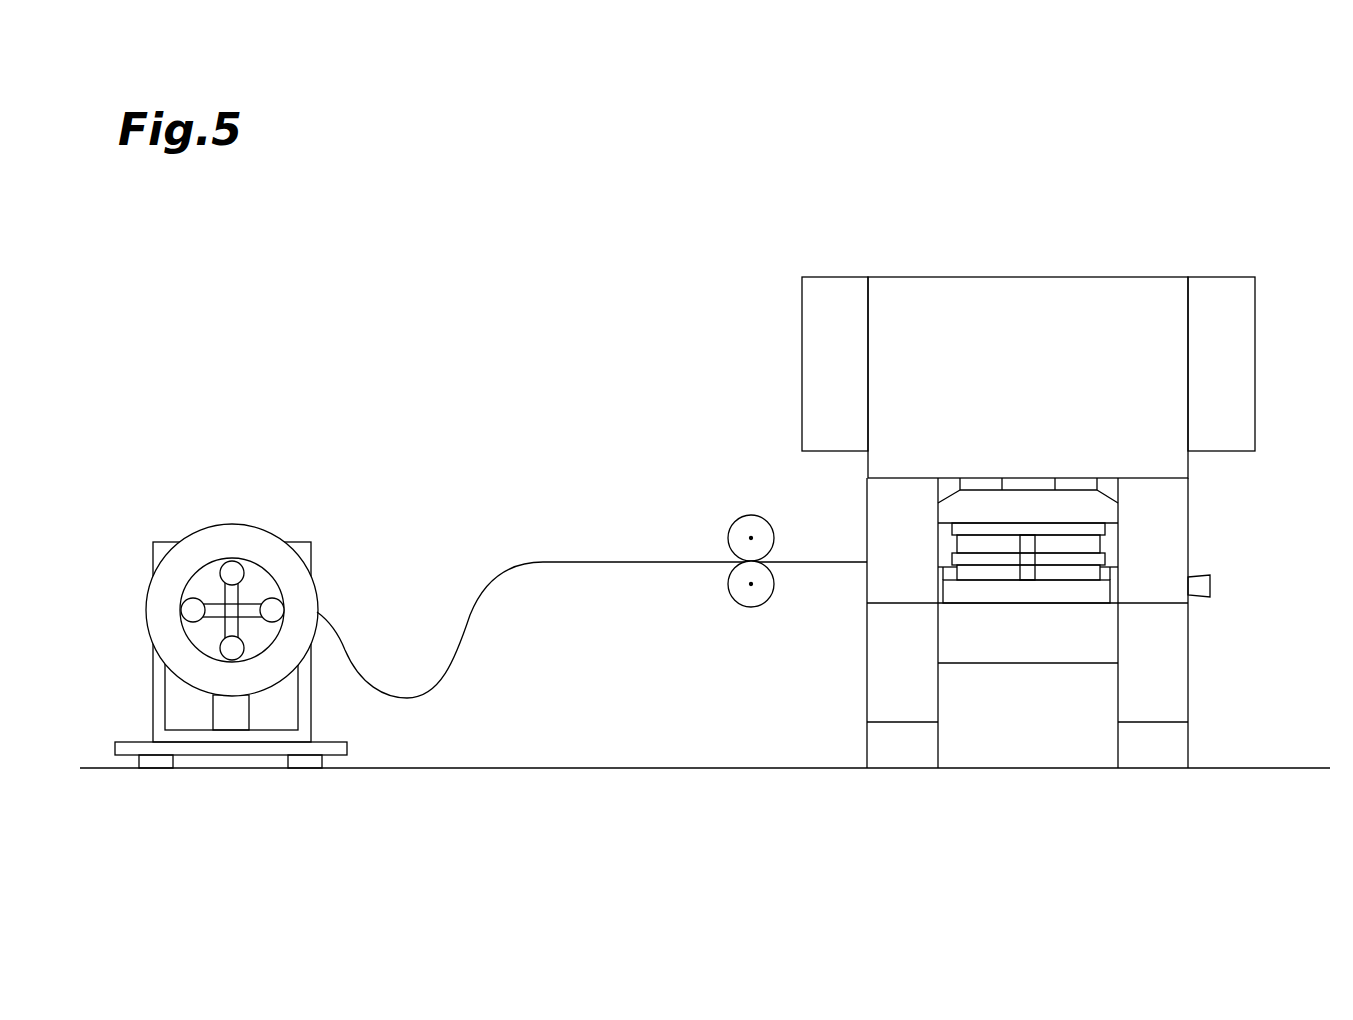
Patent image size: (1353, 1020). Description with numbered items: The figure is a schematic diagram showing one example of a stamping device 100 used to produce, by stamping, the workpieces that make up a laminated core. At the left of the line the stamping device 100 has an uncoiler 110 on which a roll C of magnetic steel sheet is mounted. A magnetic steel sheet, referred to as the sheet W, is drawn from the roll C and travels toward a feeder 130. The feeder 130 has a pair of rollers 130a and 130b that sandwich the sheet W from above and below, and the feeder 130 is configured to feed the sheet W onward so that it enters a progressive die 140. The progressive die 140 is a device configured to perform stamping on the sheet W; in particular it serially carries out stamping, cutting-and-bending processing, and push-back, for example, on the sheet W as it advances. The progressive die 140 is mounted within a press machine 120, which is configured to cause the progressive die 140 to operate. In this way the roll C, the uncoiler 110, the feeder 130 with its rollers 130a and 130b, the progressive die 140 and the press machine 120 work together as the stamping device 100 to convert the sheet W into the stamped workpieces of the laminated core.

The stamping device 100 is at (1187, 174).
The uncoiler 110 is at (168, 542).
The roll C is at (232, 525).
The sheet W is at (345, 650).
The feeder 130 is at (767, 529).
The roller 130a is at (766, 518).
The roller 130b is at (768, 601).
The press machine 120 is at (1028, 277).
The progressive die 140 is at (1092, 545).